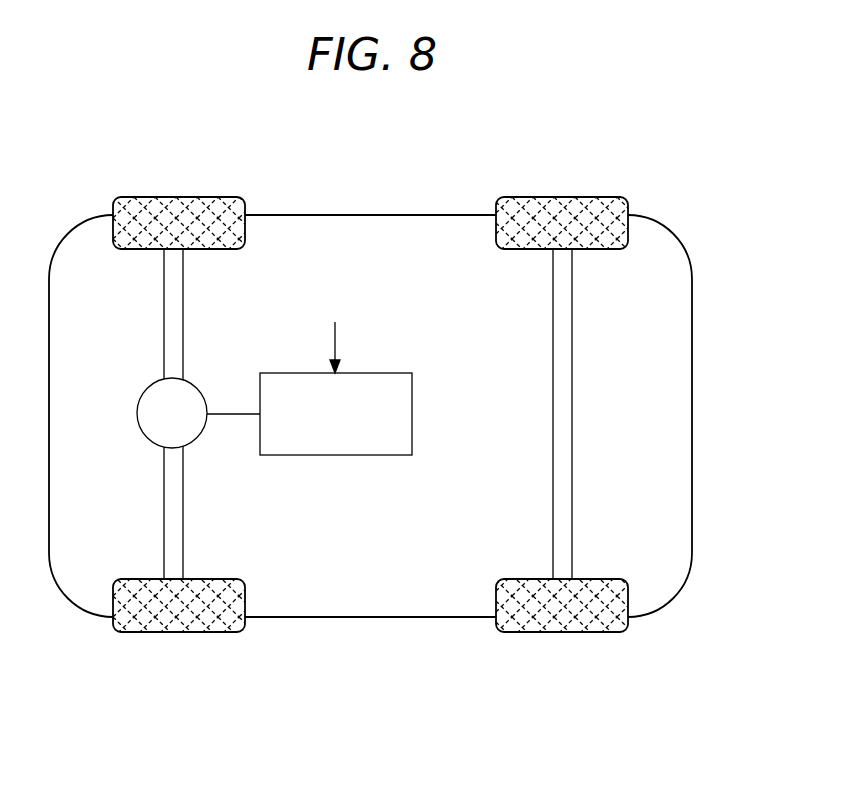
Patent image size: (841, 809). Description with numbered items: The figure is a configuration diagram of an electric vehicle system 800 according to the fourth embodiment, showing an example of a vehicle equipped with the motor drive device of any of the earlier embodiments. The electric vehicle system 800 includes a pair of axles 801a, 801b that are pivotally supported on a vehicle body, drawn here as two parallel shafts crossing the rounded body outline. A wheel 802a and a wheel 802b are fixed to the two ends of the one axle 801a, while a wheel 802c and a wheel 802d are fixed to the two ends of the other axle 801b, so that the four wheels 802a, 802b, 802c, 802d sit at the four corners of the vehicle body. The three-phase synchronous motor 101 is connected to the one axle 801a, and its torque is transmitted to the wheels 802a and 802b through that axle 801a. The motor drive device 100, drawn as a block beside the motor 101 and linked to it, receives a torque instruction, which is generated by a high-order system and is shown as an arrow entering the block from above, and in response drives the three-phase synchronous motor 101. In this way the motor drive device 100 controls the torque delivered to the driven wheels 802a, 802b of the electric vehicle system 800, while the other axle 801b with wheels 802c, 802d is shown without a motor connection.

The electric vehicle system 800 is at (357, 215).
The axle 801a is at (176, 302).
The axle 801b is at (560, 418).
The wheel 802a is at (183, 197).
The wheel 802b is at (187, 632).
The wheel 802c is at (562, 197).
The wheel 802d is at (568, 632).
The three-phase synchronous motor 101 is at (175, 395).
The motor drive device 100 is at (386, 373).